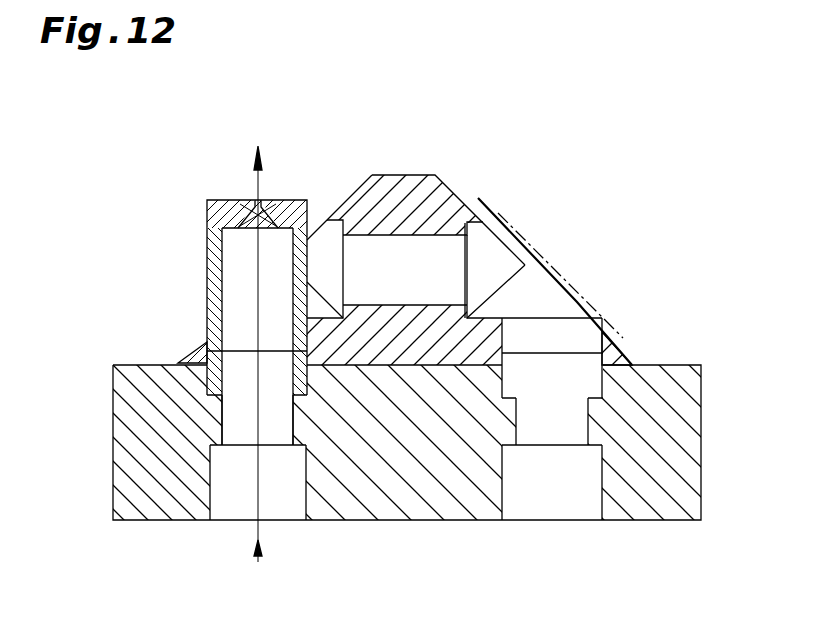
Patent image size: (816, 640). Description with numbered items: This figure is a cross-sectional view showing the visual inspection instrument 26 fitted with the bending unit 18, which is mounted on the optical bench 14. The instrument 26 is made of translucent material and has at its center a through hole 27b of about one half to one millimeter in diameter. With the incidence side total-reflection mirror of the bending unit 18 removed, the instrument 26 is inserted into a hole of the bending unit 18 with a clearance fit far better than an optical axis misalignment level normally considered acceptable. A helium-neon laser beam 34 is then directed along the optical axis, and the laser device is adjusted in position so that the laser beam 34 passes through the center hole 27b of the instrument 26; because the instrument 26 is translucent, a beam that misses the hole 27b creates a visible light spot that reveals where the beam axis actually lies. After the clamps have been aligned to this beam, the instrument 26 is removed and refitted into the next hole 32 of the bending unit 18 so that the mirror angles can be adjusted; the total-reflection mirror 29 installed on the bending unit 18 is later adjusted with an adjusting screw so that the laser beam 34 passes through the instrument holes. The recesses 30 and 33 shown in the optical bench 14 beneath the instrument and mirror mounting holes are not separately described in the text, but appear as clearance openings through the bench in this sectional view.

The optical bench 14 is at (700, 368).
The bending unit 18 is at (405, 180).
The instrument 26 is at (207, 258).
The through hole 27b is at (250, 226).
The total-reflection mirror 29 is at (600, 313).
The recess 30 is at (238, 507).
The hole 32 is at (483, 258).
The recess 33 is at (556, 503).
The laser beam 34 is at (258, 562).